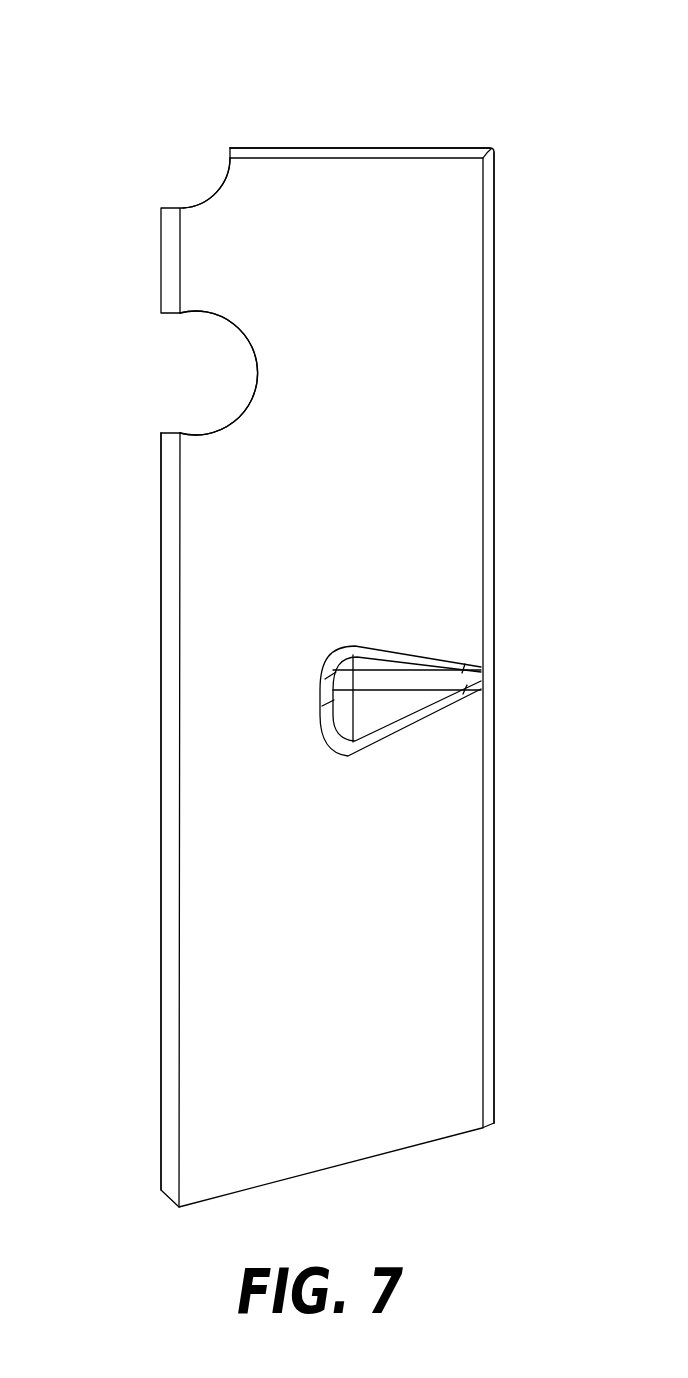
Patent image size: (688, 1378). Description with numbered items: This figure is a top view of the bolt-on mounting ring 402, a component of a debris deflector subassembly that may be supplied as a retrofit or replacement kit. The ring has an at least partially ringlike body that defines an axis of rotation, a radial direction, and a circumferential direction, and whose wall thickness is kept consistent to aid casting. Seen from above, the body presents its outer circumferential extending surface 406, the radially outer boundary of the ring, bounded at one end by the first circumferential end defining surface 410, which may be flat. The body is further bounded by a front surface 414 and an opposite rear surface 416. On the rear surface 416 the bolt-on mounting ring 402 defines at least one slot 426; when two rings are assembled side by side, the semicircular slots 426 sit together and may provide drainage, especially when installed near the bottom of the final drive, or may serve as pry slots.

The bolt-on mounting ring 402 is at (464, 87).
The outer circumferential extending surface 406 is at (342, 943).
The first circumferential end defining surface 410 is at (333, 148).
The front surface 414 is at (493, 799).
The rear surface 416 is at (161, 882).
The slot 426 is at (208, 193).